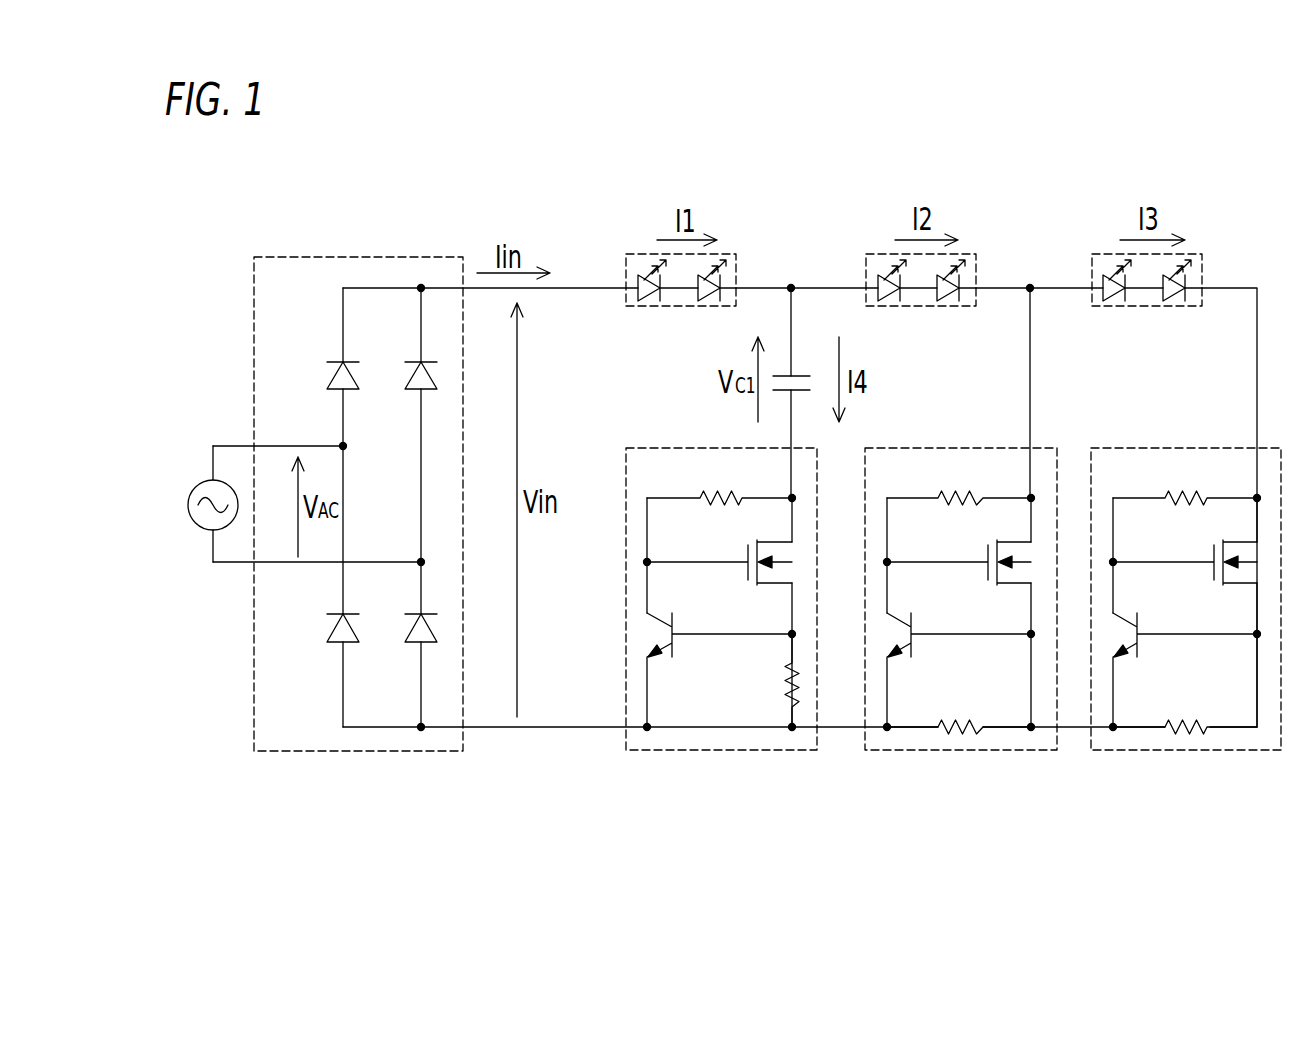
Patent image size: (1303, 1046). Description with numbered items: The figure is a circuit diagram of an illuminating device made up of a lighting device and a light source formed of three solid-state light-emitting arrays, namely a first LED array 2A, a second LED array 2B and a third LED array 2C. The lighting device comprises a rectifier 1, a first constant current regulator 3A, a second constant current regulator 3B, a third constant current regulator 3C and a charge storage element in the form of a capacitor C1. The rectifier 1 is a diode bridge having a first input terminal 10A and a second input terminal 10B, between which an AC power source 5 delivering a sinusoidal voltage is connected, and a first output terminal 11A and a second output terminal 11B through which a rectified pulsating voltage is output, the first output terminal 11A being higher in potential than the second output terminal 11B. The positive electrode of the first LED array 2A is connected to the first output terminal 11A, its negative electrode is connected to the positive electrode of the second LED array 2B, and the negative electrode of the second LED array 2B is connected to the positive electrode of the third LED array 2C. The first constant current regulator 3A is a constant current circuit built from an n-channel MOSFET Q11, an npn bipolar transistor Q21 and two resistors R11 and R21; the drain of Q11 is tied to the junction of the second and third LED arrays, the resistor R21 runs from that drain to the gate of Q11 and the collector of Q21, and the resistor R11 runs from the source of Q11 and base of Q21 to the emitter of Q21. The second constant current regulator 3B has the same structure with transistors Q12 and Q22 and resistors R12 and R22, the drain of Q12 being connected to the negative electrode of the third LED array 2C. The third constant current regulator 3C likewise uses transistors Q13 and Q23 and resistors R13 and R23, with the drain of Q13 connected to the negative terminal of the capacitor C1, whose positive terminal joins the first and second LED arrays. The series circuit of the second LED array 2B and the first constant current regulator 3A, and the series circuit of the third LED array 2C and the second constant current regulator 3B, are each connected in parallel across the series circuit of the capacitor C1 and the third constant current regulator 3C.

The rectifier 1 is at (338, 462).
The AC power source 5 is at (198, 483).
The first input terminal 10A is at (341, 444).
The second input terminal 10B is at (419, 560).
The first output terminal 11A is at (419, 291).
The second output terminal 11B is at (419, 725).
The first LED array 2A is at (644, 241).
The second LED array 2B is at (883, 241).
The third LED array 2C is at (1110, 241).
The first constant current regulator 3A is at (961, 642).
The second constant current regulator 3B is at (1186, 642).
The third constant current regulator 3C is at (721, 642).
The capacitor C1 is at (800, 364).
The resistor R23 is at (719, 479).
The transistor Q13 is at (719, 555).
The transistor Q23 is at (719, 662).
The resistor R13 is at (765, 680).
The resistor R21 is at (959, 479).
The transistor Q11 is at (959, 555).
The transistor Q21 is at (959, 662).
The resistor R11 is at (959, 705).
The resistor R22 is at (1185, 479).
The transistor Q12 is at (1185, 555).
The transistor Q22 is at (1185, 662).
The resistor R12 is at (1185, 705).